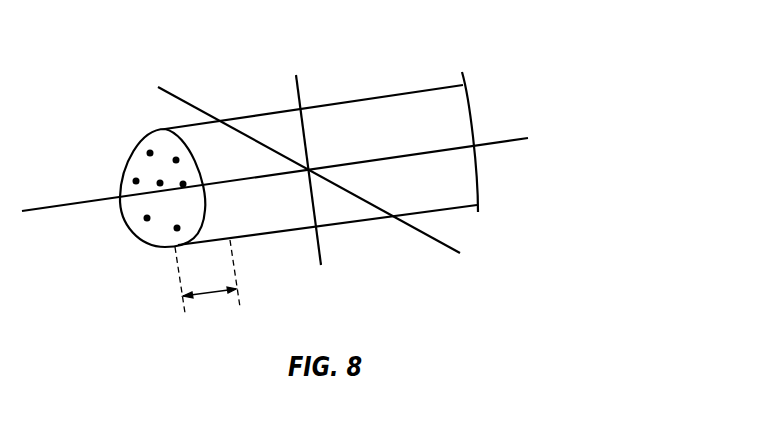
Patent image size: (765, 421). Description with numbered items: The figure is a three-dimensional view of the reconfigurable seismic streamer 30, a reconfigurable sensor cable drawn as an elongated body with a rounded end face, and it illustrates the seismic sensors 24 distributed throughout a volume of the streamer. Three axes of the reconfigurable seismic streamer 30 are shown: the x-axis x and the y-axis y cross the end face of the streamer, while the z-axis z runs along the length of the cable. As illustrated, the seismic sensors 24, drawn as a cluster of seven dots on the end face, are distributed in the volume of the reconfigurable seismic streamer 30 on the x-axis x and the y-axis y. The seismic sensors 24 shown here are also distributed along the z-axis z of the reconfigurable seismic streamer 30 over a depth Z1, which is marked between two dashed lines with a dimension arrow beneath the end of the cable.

The reconfigurable seismic streamer 30 is at (406, 92).
The seismic sensors 24 is at (135, 180).
The depth Z1 is at (207, 288).
The x-axis x is at (318, 179).
The y-axis y is at (313, 185).
The z-axis z is at (284, 168).